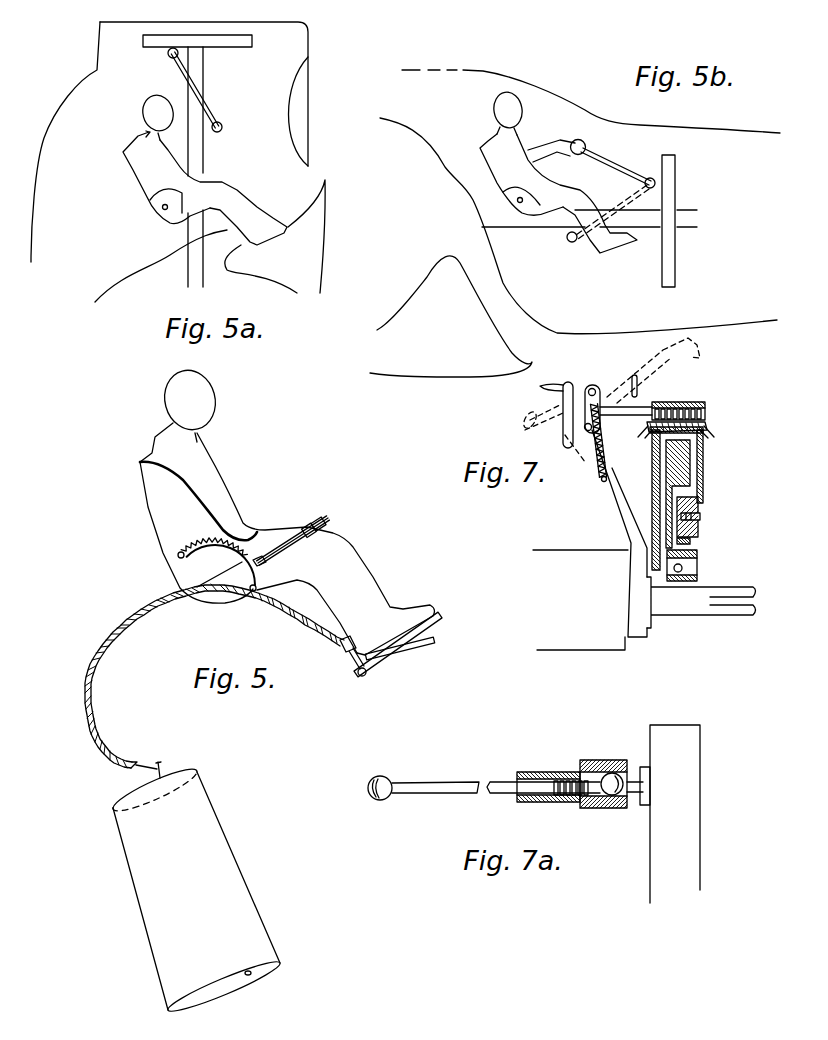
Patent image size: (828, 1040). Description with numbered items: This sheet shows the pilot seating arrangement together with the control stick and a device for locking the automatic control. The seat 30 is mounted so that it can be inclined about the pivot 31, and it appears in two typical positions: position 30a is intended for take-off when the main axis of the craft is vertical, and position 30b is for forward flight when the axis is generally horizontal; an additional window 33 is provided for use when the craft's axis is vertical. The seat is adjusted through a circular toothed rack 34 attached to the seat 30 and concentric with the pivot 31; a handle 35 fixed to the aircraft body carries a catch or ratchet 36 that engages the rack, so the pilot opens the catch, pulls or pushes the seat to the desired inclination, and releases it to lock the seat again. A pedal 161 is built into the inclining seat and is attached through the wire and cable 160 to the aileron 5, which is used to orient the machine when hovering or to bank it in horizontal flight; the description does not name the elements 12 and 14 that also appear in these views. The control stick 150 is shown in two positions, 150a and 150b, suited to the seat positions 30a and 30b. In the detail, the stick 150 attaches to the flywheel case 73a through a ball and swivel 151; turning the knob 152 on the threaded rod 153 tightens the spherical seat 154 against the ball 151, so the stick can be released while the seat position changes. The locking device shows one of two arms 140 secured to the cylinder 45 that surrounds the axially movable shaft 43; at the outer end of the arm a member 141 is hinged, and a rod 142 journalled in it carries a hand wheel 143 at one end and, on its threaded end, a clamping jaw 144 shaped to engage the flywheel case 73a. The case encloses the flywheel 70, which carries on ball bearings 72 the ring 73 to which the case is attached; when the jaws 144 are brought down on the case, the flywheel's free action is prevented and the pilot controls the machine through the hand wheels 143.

In FIG. 5, the aileron 5 is at (203, 808).
In FIG. 5, the seat 12 is at (225, 480).
In FIG. 5B, the floor structure 14 is at (500, 283).
In FIG. 5, the seat 30 is at (218, 513).
In FIG. 5A, the seat position for take-off 30a is at (132, 180).
In FIG. 5B, the seat position for forward flight 30b is at (493, 178).
In FIG. 5A, the pivot 31 is at (162, 210).
In FIG. 5B, the pivot 31 is at (515, 202).
In FIG. 5A, the additional window 33 is at (309, 84).
In FIG. 5, the circular toothed rack 34 is at (262, 542).
In FIG. 5, the handle 35 is at (327, 508).
In FIG. 5, the catch or ratchet 36 is at (266, 563).
In FIG. 7, the shaft 43 is at (707, 577).
In FIG. 7, the cylinder 45 is at (565, 550).
In FIG. 7, the flywheel 70 is at (690, 458).
In FIG. 7, the ball bearings 72 is at (691, 539).
In FIG. 7, the ring 73 is at (700, 508).
In FIG. 5B, the flywheel case 73a is at (672, 161).
In FIG. 7, the flywheel case 73a is at (703, 483).
In FIG. 7A, the flywheel case 73a is at (684, 733).
In FIG. 7, the arm 140 is at (608, 488).
In FIG. 7, the hinged member 141 is at (592, 384).
In FIG. 7, the rod 142 is at (707, 408).
In FIG. 7, the hand wheel 143 is at (547, 395).
In FIG. 7, the clamping jaw 144 is at (707, 425).
In FIG. 7A, the control stick 150 is at (528, 772).
In FIG. 5A, the control stick position 150a is at (212, 104).
In FIG. 5B, the control stick position 150a is at (568, 242).
In FIG. 5B, the control stick position 150b is at (606, 150).
In FIG. 7A, the ball and swivel 151 is at (637, 772).
In FIG. 7A, the knob 152 is at (388, 775).
In FIG. 7A, the threaded rod 153 is at (448, 780).
In FIG. 7A, the spherical seat 154 is at (603, 760).
In FIG. 5, the wire and cable 160 is at (128, 617).
In FIG. 5, the pedal 161 is at (440, 619).